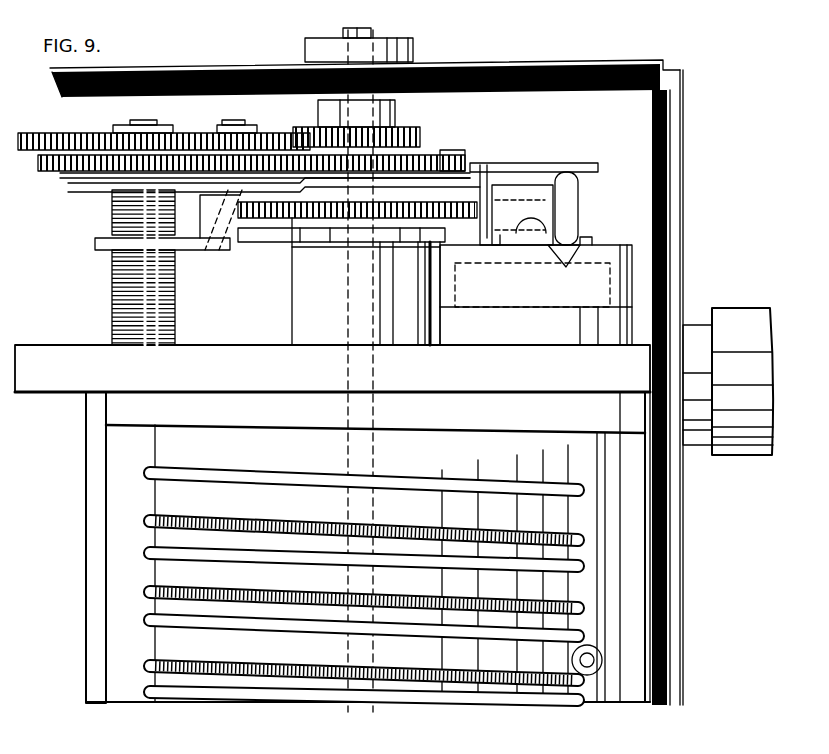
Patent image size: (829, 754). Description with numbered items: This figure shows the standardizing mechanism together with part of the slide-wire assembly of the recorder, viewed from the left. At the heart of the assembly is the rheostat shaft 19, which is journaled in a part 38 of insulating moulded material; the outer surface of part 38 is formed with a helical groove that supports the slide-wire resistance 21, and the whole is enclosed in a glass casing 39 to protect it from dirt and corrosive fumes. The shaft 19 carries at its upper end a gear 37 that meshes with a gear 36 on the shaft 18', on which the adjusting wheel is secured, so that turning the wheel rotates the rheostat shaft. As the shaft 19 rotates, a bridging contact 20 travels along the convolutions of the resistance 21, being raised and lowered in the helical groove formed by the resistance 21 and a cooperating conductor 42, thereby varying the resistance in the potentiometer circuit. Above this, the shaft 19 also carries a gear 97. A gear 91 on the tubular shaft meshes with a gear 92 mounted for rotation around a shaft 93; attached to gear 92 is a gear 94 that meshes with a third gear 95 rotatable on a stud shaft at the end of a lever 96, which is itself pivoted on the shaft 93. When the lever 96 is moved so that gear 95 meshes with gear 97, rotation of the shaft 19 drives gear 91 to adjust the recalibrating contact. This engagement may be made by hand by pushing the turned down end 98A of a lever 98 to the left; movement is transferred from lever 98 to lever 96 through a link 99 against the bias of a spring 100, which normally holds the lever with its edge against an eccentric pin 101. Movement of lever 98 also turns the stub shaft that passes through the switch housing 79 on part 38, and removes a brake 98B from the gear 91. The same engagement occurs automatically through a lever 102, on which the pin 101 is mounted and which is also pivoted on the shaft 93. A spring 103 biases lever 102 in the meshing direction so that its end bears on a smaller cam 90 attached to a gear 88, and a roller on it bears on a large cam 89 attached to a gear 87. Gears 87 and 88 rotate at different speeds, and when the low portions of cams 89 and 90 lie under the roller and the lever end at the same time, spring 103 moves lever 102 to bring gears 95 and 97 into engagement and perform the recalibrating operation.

The rheostat shaft 19 is at (345, 30).
The gear 37 is at (598, 68).
The gear 36 is at (672, 242).
The shaft 18' is at (728, 364).
The part 38 is at (55, 395).
The casing 39 is at (92, 580).
The slide-wire resistance 21 is at (153, 518).
The cooperating conductor 42 is at (152, 555).
The bridging contact 20 is at (587, 676).
The gear 94 is at (40, 134).
The shaft 93 is at (130, 125).
The gear 92 is at (56, 172).
The gear 95 is at (300, 132).
The gear 97 is at (398, 128).
The gear 91 is at (447, 157).
The link 99 is at (588, 157).
The spring 100 is at (108, 241).
The lever 102 is at (108, 250).
The eccentric pin 101 is at (222, 225).
The lever 96 is at (112, 200).
The spring 103 is at (115, 278).
The cam 89 is at (255, 220).
The gear 87 is at (292, 220).
The gear 88 is at (318, 220).
The cam 90 is at (336, 244).
The switch housing 79 is at (604, 252).
The brake 98B is at (483, 162).
The lever 98 is at (528, 184).
The turned down end 98A is at (576, 200).